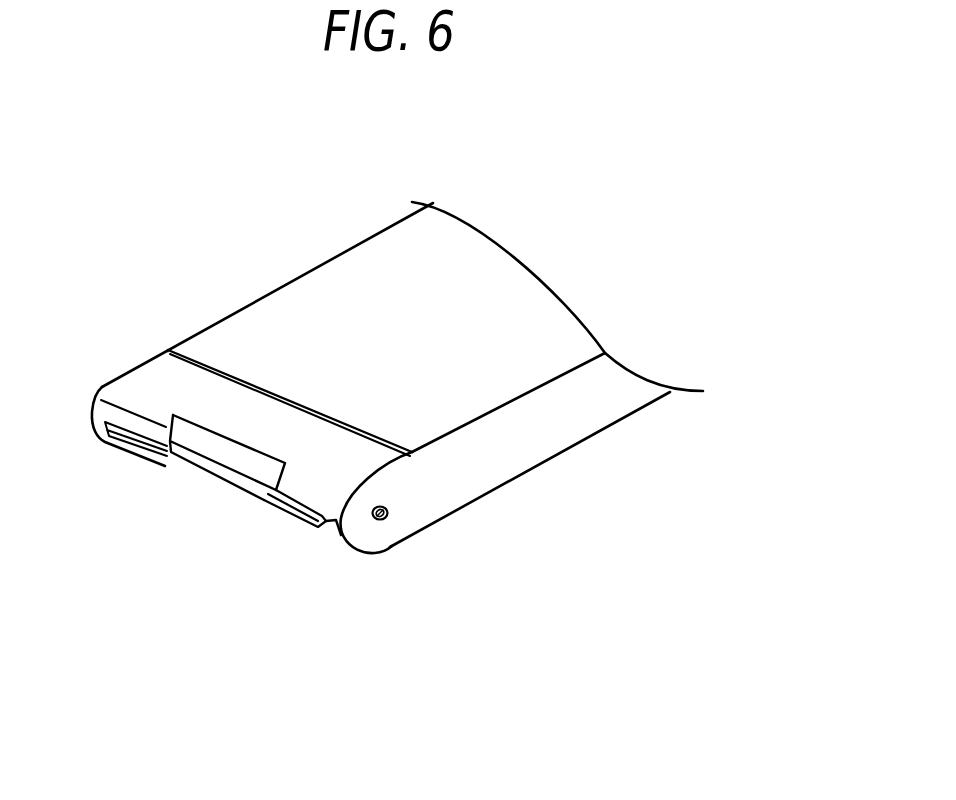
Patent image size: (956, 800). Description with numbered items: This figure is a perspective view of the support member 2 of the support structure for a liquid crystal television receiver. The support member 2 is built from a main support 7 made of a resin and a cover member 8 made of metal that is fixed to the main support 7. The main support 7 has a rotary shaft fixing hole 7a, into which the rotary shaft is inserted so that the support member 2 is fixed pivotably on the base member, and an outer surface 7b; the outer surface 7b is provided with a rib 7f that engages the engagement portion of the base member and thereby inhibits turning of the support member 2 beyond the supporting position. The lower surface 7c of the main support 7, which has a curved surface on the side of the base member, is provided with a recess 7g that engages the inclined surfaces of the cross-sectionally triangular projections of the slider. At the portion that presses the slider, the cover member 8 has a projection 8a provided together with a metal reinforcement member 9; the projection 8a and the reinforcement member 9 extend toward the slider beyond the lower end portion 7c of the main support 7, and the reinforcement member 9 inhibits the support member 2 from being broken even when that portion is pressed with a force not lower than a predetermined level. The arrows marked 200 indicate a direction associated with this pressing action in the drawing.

The support member 2 is at (280, 238).
The main support 7 is at (345, 312).
The rotary shaft fixing hole 7a is at (402, 508).
The outer surface 7b is at (453, 322).
The lower surface 7c is at (221, 413).
The rib 7f is at (227, 368).
The recess 7g is at (152, 424).
The cover member 8 is at (290, 517).
The projection 8a is at (295, 508).
The metal reinforcement member 9 is at (160, 462).
The movement direction 200 is at (300, 418).